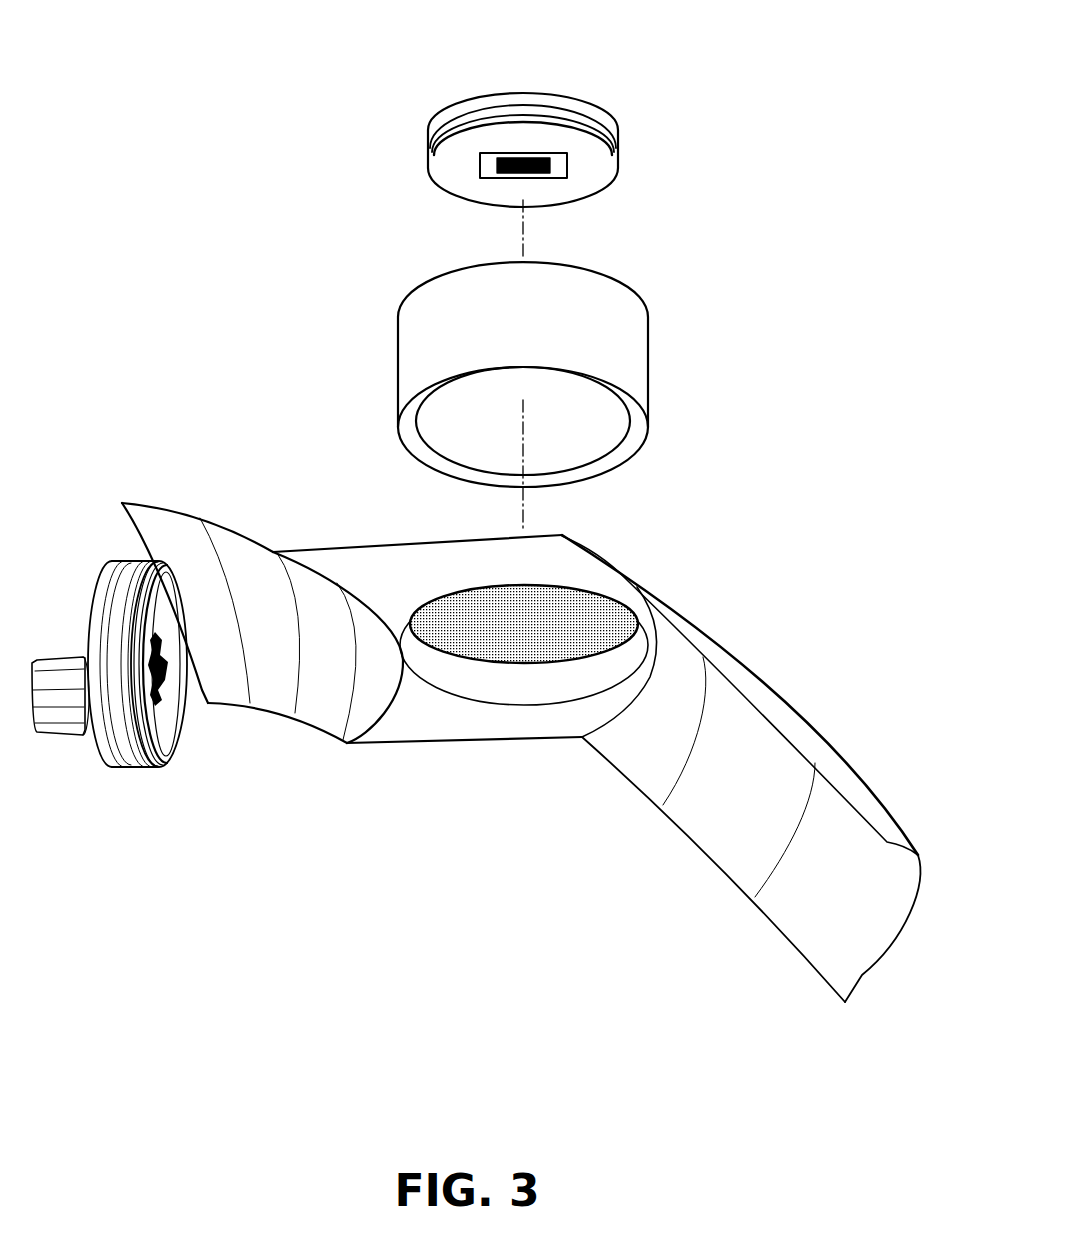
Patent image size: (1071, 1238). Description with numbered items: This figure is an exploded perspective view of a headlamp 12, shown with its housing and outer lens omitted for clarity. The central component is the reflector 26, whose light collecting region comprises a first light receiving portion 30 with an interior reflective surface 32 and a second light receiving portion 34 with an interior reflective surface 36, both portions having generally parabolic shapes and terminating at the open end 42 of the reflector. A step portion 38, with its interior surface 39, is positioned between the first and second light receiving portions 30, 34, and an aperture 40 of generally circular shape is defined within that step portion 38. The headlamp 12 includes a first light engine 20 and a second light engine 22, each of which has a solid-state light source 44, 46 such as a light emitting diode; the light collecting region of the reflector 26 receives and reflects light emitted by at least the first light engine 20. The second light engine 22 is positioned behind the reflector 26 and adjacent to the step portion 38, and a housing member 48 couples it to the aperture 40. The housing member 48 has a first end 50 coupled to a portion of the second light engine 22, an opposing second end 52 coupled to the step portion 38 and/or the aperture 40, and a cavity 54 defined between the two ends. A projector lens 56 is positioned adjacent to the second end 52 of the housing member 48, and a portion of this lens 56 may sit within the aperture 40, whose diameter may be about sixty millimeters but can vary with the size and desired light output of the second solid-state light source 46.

The headlamp 12 is at (77, 162).
The first light engine 20 is at (126, 731).
The second light engine 22 is at (547, 146).
The reflector 26 is at (498, 717).
The first light receiving portion 30 is at (222, 523).
The interior reflective surface of first light receiving portion 32 is at (239, 626).
The second light receiving portion 34 is at (741, 801).
The interior reflective surface of second light receiving portion 36 is at (708, 828).
The step portion 38 is at (365, 545).
The interior surface of step portion 39 is at (417, 717).
The aperture 40 is at (518, 683).
The open end of reflector 42 is at (862, 975).
The first solid-state light source 44 is at (165, 668).
The second solid-state light source 46 is at (495, 165).
The housing member 48 is at (552, 378).
The first end of housing member 50 is at (602, 273).
The second end of housing member 52 is at (417, 392).
The cavity of housing member 54 is at (553, 442).
The projector lens 56 is at (563, 618).